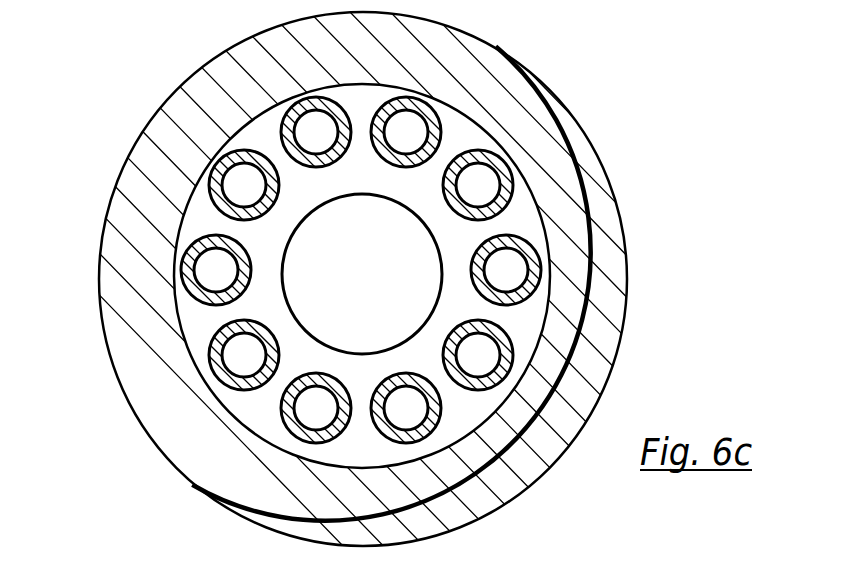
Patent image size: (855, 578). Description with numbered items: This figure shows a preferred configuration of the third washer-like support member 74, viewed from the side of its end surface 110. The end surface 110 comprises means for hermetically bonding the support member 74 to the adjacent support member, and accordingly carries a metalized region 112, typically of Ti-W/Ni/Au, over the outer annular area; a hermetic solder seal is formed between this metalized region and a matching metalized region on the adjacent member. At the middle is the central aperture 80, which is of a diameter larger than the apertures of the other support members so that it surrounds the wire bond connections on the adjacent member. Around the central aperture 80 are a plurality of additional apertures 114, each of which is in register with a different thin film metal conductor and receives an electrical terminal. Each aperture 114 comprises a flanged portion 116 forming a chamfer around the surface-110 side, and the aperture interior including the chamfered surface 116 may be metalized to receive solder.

The third washer-like support member 74 is at (627, 166).
The central aperture 80 is at (441, 260).
The end surface 110 is at (323, 196).
The metalized region 112 is at (608, 305).
The additional apertures 114 is at (428, 123).
The flanged portion 116 is at (345, 392).